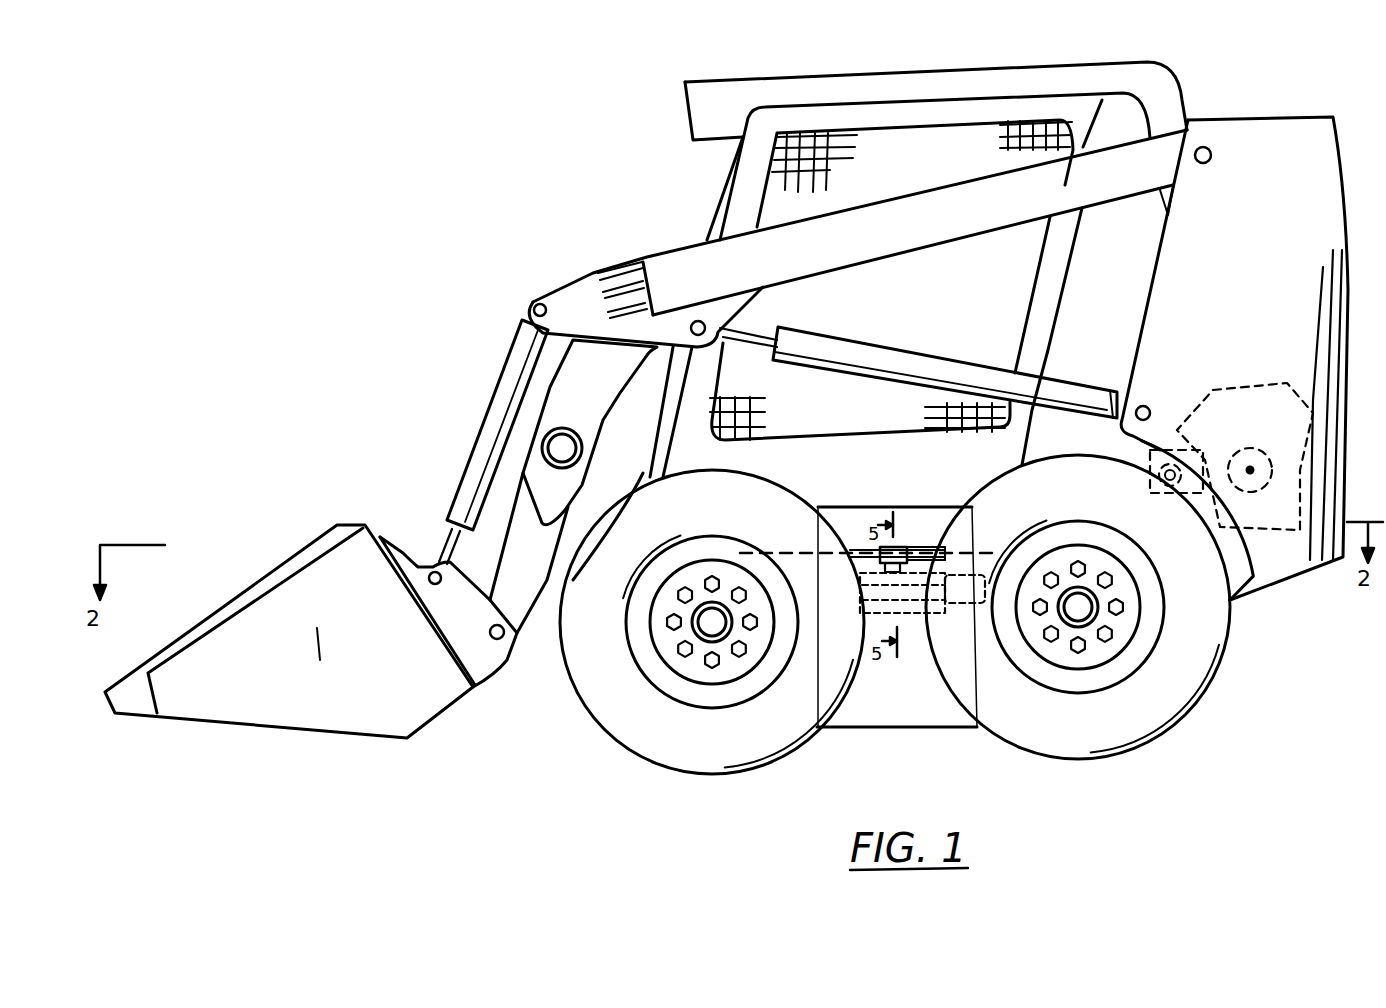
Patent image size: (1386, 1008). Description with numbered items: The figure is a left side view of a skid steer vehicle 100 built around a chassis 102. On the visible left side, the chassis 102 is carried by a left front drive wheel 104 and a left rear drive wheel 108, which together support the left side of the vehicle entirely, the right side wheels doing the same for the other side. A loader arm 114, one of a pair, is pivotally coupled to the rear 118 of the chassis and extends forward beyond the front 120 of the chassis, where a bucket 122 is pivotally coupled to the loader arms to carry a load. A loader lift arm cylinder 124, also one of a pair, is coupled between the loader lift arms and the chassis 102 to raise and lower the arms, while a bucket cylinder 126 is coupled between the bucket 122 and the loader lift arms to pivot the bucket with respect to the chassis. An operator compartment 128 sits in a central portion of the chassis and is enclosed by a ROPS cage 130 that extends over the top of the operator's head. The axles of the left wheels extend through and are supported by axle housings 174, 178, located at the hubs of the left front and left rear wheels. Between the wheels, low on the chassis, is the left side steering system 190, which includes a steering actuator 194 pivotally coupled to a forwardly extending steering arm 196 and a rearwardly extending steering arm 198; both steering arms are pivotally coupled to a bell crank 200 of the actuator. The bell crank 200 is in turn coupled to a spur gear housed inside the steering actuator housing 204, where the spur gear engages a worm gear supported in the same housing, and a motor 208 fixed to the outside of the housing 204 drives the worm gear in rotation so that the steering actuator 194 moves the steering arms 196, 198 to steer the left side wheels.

The skid steer vehicle 100 is at (486, 186).
The chassis 102 is at (873, 715).
The left front drive wheel 104 is at (597, 713).
The left rear drive wheel 108 is at (1213, 682).
The loader arm 114 is at (578, 292).
The rear of the chassis 118 is at (1225, 118).
The front of the chassis 120 is at (596, 206).
The bucket 122 is at (320, 540).
The loader lift arm cylinder 124 is at (940, 316).
The bucket cylinder 126 is at (495, 395).
The operator compartment 128 is at (940, 164).
The ROPS cage 130 is at (712, 190).
The axle housing 174 is at (665, 645).
The axle housing 178 is at (1133, 588).
The left side steering system 190 is at (922, 522).
The steering actuator 194 is at (919, 640).
The forwardly extending steering arm 196 is at (857, 548).
The rearwardly extending steering arm 198 is at (933, 548).
The bell crank 200 is at (885, 545).
The steering actuator housing 204 is at (860, 627).
The motor 208 is at (958, 603).